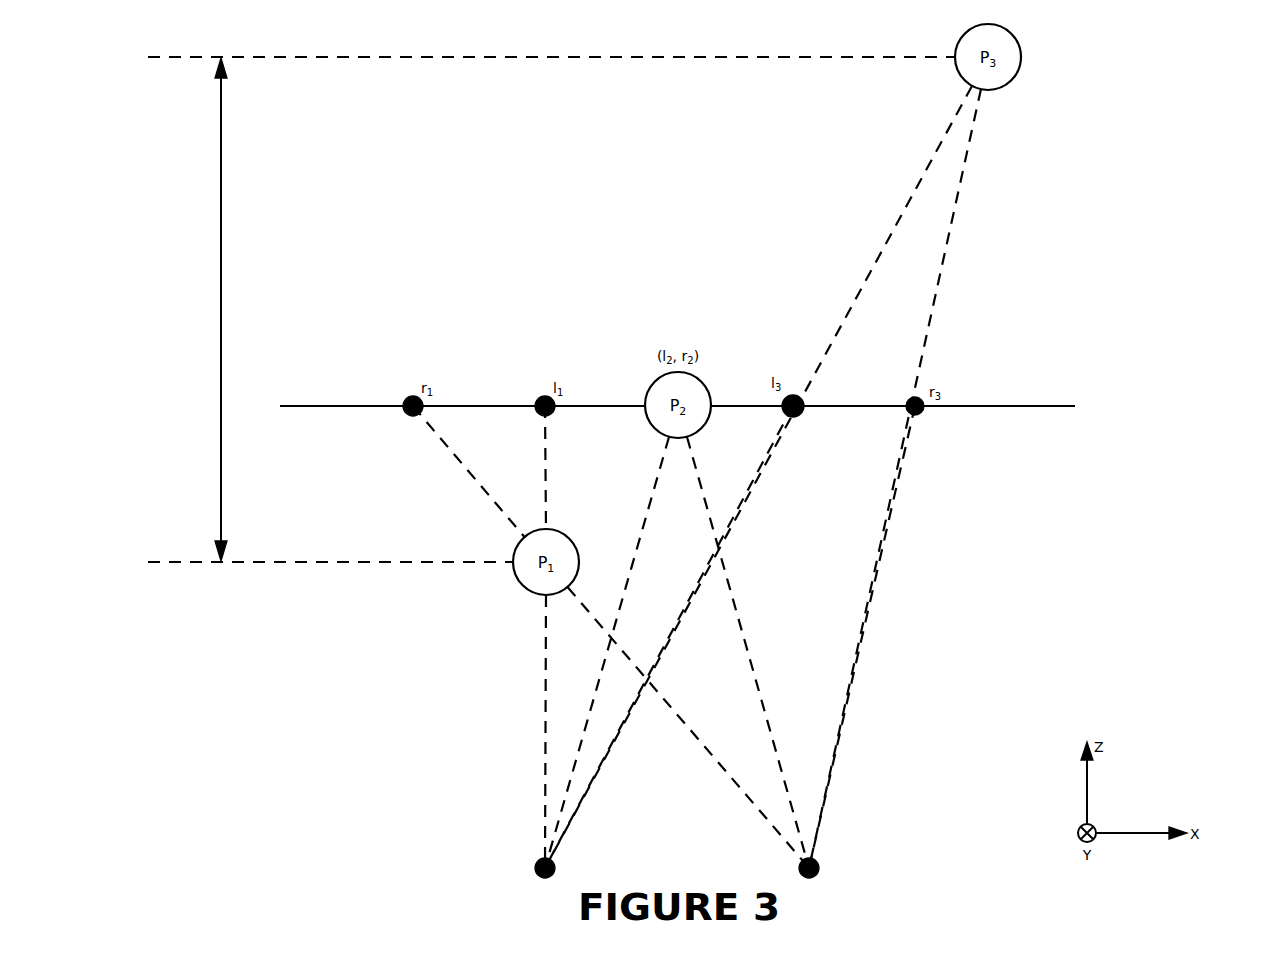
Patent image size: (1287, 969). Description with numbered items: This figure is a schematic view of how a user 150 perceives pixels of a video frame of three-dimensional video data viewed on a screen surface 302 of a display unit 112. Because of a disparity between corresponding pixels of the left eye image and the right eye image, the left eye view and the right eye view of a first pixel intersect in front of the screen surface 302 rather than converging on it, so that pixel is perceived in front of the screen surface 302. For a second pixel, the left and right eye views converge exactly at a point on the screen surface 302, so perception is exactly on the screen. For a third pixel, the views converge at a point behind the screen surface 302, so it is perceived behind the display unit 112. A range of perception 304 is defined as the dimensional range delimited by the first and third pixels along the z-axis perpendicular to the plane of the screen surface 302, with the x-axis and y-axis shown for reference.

The range of perception 304 is at (221, 284).
The screen surface 302 is at (1050, 406).
The display unit 112 is at (761, 396).
The user 150 is at (540, 860).